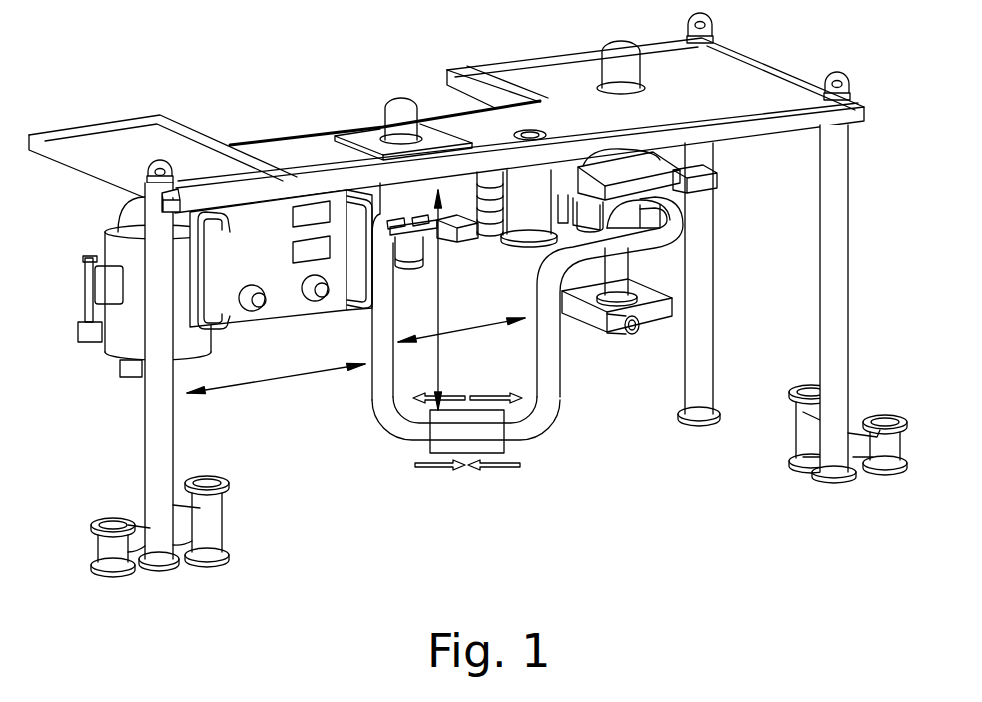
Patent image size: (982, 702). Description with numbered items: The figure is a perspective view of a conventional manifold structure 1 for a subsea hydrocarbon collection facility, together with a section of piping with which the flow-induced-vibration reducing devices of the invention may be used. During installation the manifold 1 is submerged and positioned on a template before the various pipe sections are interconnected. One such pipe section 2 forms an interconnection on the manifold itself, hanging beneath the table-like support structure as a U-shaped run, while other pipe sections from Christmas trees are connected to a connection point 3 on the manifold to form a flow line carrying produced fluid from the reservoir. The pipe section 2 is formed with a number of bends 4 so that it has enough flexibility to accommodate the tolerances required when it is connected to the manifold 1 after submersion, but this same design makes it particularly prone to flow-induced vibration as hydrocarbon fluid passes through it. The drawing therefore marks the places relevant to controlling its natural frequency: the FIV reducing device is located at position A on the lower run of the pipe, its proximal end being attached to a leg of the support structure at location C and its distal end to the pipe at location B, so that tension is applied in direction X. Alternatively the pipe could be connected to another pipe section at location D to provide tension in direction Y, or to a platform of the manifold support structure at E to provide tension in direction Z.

The manifold structure 1 is at (625, 472).
The pipe section 2 is at (488, 331).
The connection point 3 is at (652, 315).
The bends 4 is at (390, 423).
The position A is at (477, 428).
The location B is at (385, 352).
The location C is at (160, 395).
The location D is at (550, 323).
The location E is at (442, 170).
The direction X is at (276, 373).
The direction Y is at (461, 320).
The direction Z is at (447, 300).